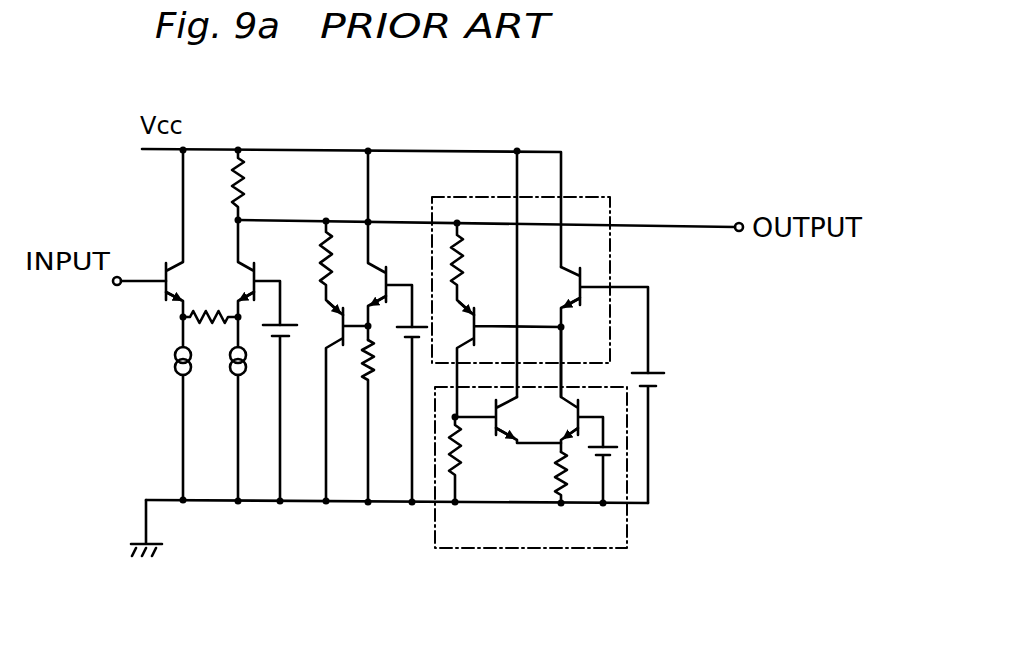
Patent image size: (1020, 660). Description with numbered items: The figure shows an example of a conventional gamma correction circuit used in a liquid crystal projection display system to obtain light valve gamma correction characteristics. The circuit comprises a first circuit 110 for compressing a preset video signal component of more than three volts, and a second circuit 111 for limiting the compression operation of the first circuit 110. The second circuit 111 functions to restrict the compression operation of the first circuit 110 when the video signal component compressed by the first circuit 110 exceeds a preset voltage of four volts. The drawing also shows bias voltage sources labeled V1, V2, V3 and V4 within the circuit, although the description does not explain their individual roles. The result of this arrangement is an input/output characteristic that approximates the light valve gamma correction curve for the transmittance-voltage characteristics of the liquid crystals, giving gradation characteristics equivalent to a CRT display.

The first circuit 110 is at (600, 197).
The second circuit 111 is at (550, 487).
The bias voltage source V1 is at (291, 413).
The bias voltage source V2 is at (423, 414).
The bias voltage source V3 is at (666, 436).
The bias voltage source V4 is at (627, 475).